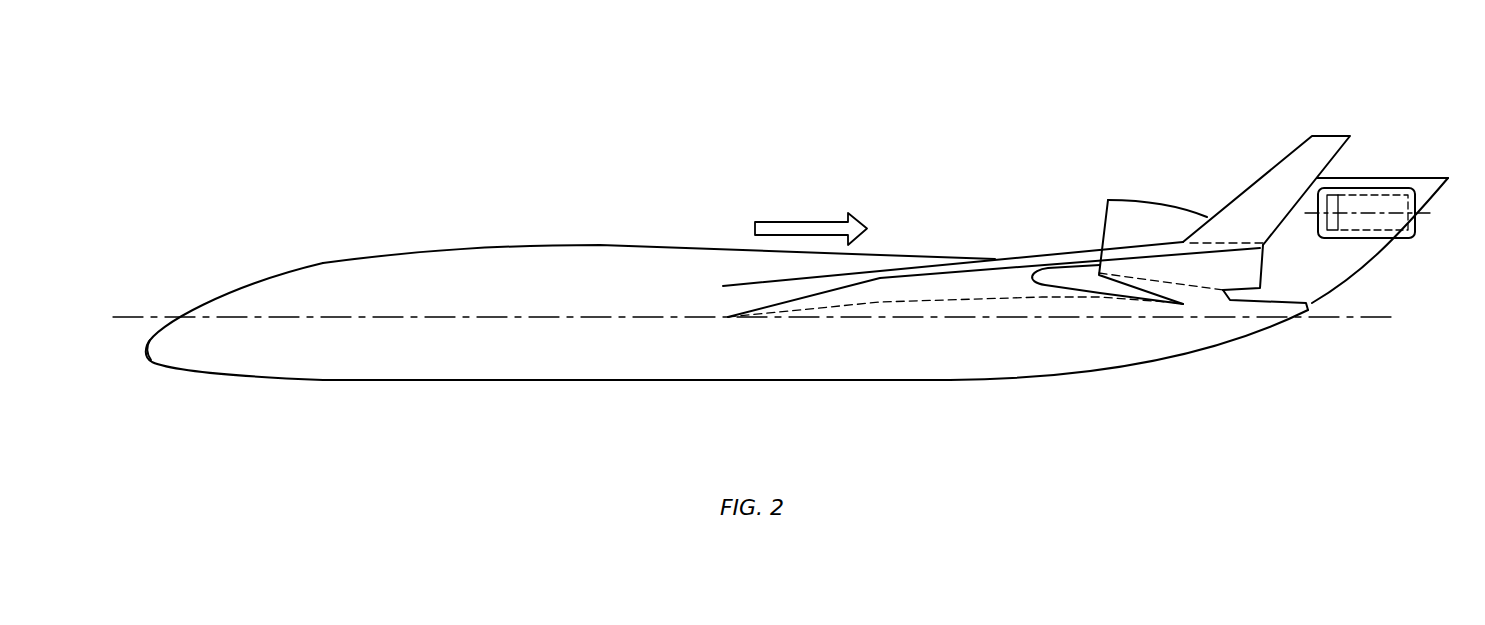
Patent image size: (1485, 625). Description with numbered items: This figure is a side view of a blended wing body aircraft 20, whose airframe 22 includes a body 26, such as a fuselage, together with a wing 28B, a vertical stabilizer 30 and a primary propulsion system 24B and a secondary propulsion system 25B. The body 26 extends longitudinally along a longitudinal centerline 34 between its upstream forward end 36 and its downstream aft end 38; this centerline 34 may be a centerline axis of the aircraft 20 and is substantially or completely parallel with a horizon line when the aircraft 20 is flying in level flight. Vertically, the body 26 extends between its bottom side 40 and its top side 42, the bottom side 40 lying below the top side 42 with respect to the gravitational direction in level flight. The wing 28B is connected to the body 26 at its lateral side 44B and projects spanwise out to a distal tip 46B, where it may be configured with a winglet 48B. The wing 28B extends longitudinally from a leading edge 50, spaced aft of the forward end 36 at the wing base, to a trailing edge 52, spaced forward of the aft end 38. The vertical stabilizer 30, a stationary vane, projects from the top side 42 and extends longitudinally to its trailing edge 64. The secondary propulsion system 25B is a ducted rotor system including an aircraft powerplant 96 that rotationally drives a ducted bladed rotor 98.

The blended wing body aircraft 20 is at (222, 145).
The airframe 22 is at (450, 232).
The primary propulsion system 24B is at (1158, 200).
The secondary propulsion system 25B is at (1400, 182).
The body 26 is at (372, 253).
The wing 28B is at (957, 263).
The vertical stabilizer 30 is at (1377, 273).
The longitudinal centerline 34 is at (122, 316).
The forward end 36 is at (145, 350).
The aft end 38 is at (1312, 305).
The bottom side 40 is at (583, 380).
The top side 42 is at (625, 245).
The lateral side 44B is at (653, 303).
The distal tip 46B is at (1205, 243).
The winglet 48B is at (1247, 177).
The leading edge 50 is at (915, 272).
The trailing edge 52 is at (1058, 280).
The trailing edge 64 is at (1387, 253).
The aircraft powerplant 96 is at (1367, 193).
The ducted bladed rotor 98 is at (1332, 233).